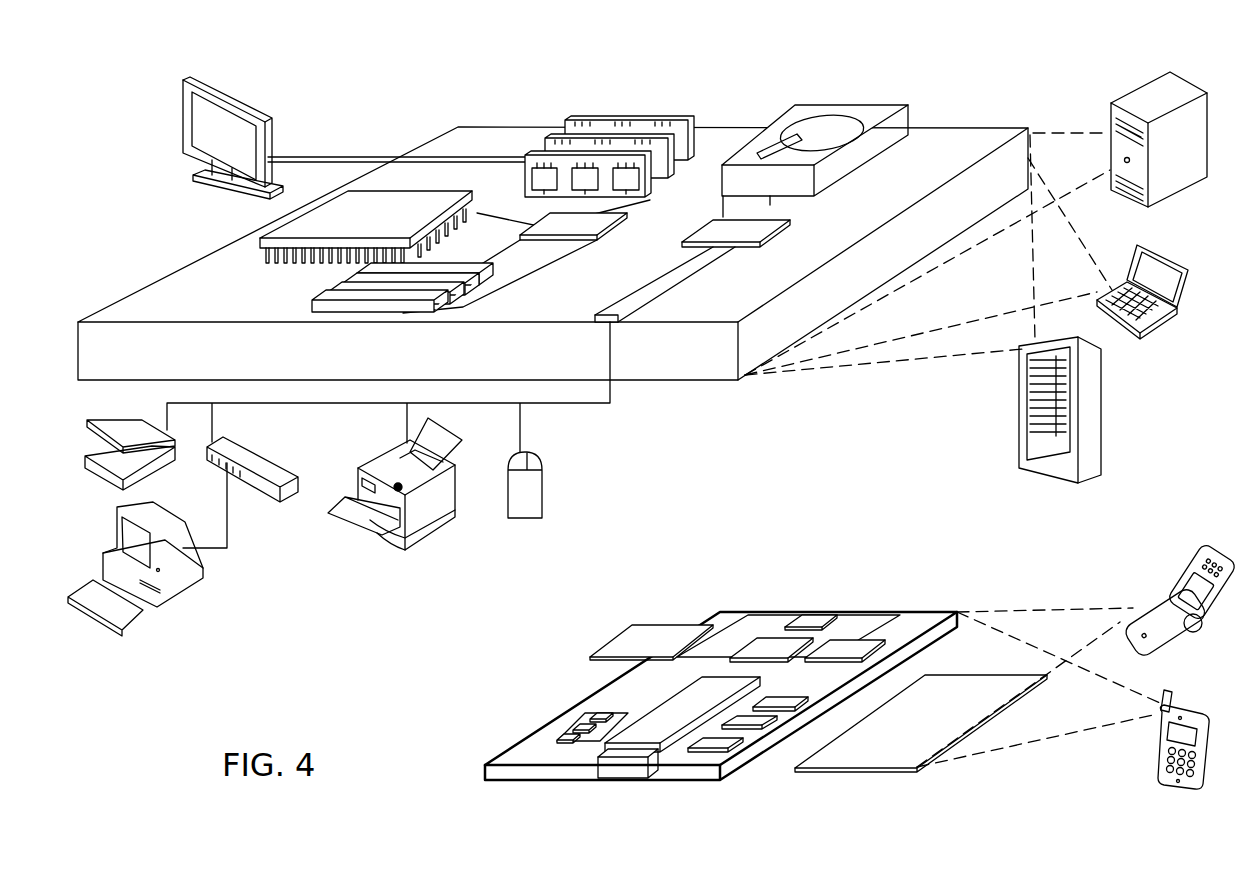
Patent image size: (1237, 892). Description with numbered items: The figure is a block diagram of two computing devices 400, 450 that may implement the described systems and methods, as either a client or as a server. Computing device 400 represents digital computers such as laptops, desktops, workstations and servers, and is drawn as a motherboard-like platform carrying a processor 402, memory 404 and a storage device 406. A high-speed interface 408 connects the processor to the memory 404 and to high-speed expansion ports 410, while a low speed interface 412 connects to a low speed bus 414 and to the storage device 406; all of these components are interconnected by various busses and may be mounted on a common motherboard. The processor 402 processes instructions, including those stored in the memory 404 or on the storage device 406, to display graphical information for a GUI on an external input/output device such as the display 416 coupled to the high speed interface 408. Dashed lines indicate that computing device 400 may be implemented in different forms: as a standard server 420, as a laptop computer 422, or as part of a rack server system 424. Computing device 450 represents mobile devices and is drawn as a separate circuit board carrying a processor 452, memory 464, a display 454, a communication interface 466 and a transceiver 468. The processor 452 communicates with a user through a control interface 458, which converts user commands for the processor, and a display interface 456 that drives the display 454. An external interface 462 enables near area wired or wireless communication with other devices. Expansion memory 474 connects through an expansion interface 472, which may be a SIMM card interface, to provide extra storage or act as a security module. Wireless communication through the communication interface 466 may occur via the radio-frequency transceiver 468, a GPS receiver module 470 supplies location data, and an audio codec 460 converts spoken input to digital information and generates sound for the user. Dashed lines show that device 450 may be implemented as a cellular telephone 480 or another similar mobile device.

The computing device 400 is at (380, 95).
The processor 402 is at (258, 246).
The memory 404 is at (575, 118).
The storage device 406 is at (802, 107).
The high-speed interface 408 is at (550, 228).
The high-speed expansion ports 410 is at (318, 290).
The low speed interface 412 is at (737, 233).
The low speed bus 414 is at (618, 323).
The display 416 is at (185, 85).
The standard server 420 is at (1111, 113).
The laptop computer 422 is at (1138, 245).
The rack server system 424 is at (1019, 438).
The computing device 450 is at (705, 594).
The processor 452 is at (660, 757).
The display 454 is at (920, 770).
The display interface 456 is at (728, 752).
The control interface 458 is at (762, 728).
The audio codec 460 is at (798, 708).
The external interface 462 is at (622, 767).
The memory 464 is at (575, 727).
The communication interface 466 is at (771, 656).
The transceiver 468 is at (848, 650).
The GPS receiver module 470 is at (820, 614).
The expansion interface 472 is at (690, 617).
The expansion memory 474 is at (632, 627).
The cellular telephone 480 is at (1182, 553).